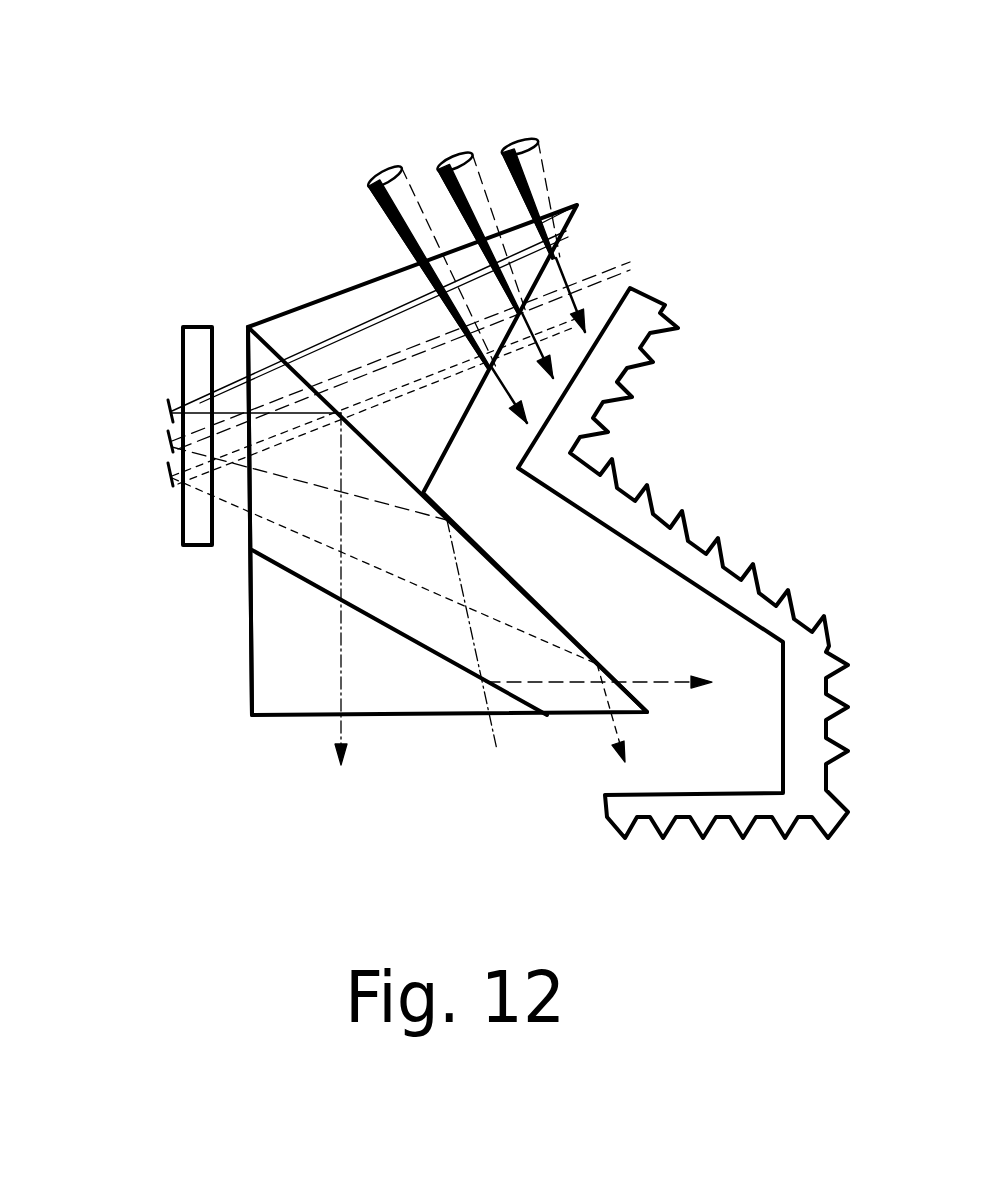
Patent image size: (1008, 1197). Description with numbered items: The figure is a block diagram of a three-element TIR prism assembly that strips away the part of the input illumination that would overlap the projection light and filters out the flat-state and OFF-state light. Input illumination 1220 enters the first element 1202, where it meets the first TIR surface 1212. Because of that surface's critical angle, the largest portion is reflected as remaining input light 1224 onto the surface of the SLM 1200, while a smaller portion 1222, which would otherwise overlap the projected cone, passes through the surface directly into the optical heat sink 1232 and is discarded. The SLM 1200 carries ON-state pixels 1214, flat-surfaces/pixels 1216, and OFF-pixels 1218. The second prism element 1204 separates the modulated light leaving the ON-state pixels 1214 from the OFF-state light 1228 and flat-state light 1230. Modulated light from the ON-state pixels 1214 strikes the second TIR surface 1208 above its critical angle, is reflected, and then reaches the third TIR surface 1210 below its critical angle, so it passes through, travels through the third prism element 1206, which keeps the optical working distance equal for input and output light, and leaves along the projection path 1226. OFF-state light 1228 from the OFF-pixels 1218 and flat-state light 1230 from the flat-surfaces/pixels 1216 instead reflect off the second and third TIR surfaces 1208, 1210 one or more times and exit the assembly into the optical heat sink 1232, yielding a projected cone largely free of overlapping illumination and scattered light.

The SLM 1200 is at (191, 325).
The first element 1202 is at (288, 312).
The second prism element 1204 is at (248, 535).
The third prism element 1206 is at (250, 632).
The second TIR surface 1208 is at (490, 560).
The third TIR surface 1210 is at (488, 655).
The first TIR surface 1212 is at (580, 206).
The ON-state pixels 1214 is at (165, 409).
The flat-surfaces/pixels 1216 is at (165, 447).
The OFF-pixels 1218 is at (165, 482).
The input illumination 1220 is at (461, 150).
The removed portion of the input light 1222 is at (572, 280).
The remaining input light 1224 is at (228, 378).
The projection path 1226 is at (337, 735).
The OFF-state light 1228 is at (615, 722).
The flat-state light 1230 is at (648, 680).
The optical heat sink 1232 is at (656, 300).